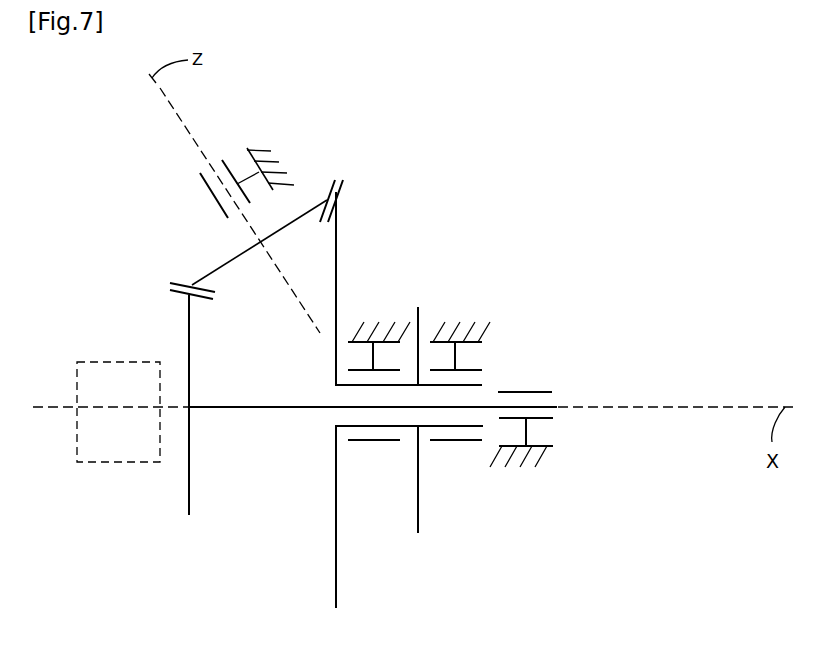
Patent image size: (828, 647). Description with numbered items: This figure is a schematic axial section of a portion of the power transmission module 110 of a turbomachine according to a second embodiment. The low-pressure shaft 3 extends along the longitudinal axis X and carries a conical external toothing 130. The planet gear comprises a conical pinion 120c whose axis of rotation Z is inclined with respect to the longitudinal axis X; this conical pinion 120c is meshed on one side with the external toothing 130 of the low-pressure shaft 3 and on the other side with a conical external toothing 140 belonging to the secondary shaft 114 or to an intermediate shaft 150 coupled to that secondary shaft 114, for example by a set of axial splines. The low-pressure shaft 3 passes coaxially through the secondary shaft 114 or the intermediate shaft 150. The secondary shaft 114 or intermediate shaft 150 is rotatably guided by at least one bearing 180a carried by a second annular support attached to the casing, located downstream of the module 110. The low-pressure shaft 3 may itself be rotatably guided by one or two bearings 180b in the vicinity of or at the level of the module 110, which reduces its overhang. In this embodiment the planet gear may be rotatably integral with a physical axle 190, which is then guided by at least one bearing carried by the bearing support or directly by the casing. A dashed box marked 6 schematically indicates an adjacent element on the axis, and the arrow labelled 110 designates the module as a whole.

The low-pressure shaft 3 is at (557, 407).
The engine 6 is at (118, 412).
The power transmission module 110 is at (652, 201).
The secondary shaft 114 is at (420, 325).
The conical pinion 120c is at (180, 285).
The external toothing 130 is at (212, 510).
The external toothing 140 is at (342, 192).
The intermediate shaft 150 is at (480, 382).
The bearing 180a is at (370, 442).
The bearing 180b is at (520, 452).
The physical axle 190 is at (270, 260).